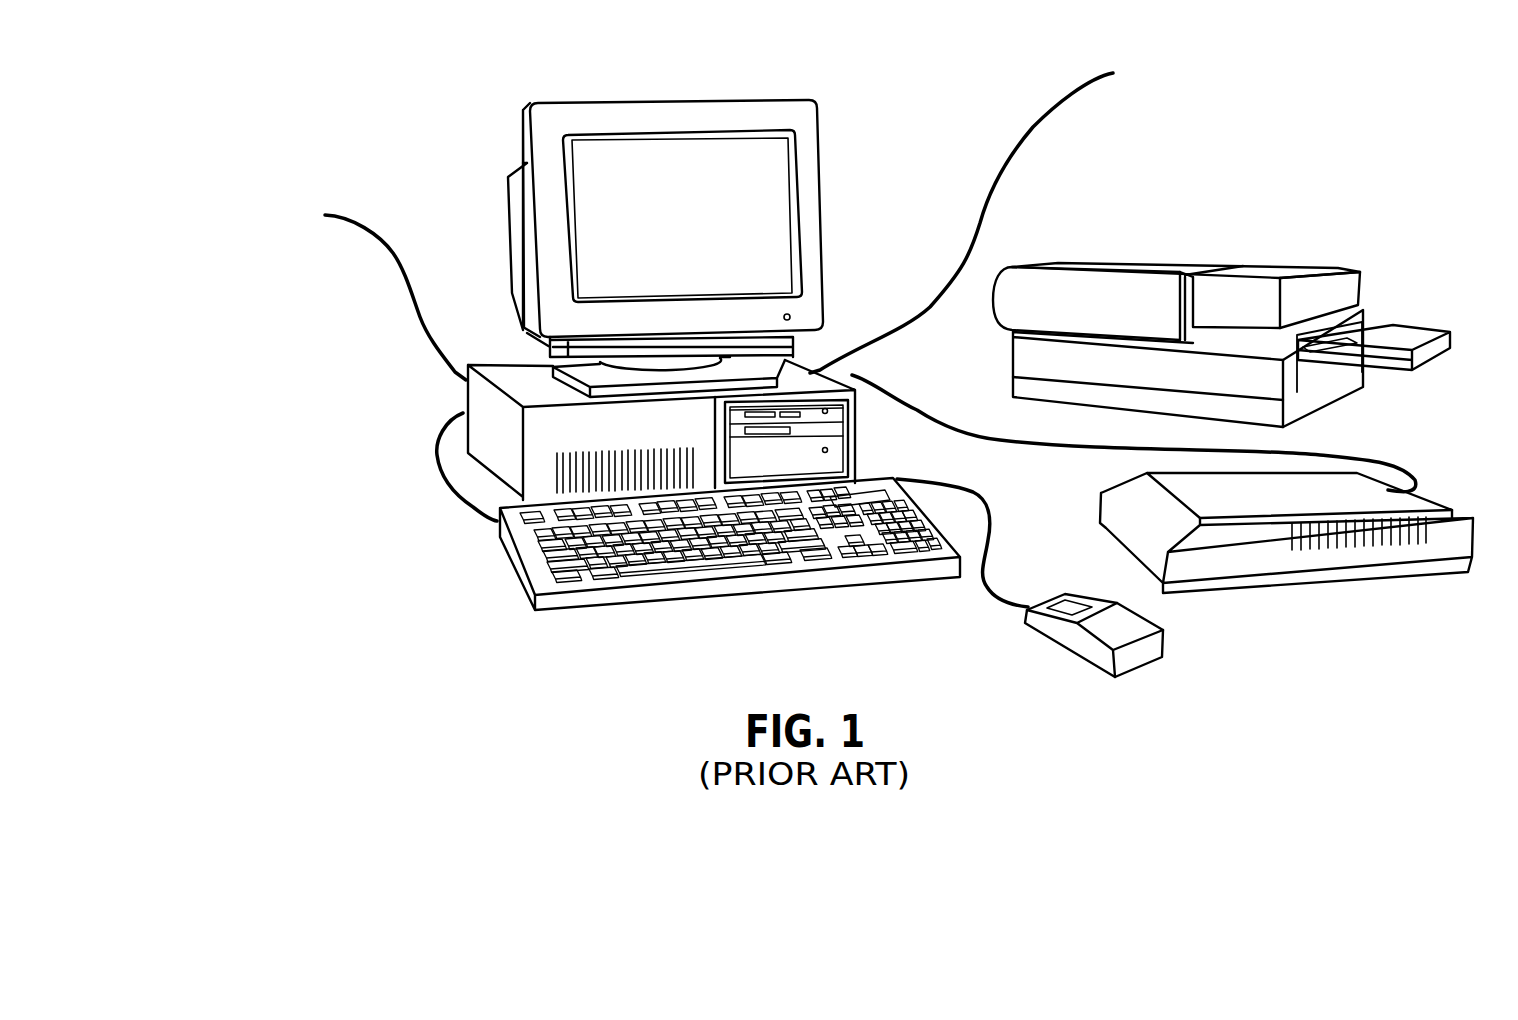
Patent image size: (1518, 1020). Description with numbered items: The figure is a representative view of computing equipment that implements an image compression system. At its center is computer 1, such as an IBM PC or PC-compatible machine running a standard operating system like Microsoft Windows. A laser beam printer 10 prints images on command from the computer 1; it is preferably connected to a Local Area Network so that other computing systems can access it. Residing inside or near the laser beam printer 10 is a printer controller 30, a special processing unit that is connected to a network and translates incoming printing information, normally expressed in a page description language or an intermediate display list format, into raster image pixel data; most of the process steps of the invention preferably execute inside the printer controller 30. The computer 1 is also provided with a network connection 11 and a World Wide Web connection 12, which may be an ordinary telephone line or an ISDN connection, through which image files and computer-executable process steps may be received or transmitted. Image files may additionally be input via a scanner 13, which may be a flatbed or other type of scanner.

The computer 1 is at (909, 124).
The laser beam printer 10 is at (1137, 262).
The network connection 11 is at (1036, 127).
The World Wide Web connection 12 is at (403, 263).
The scanner 13 is at (1325, 583).
The printer controller 30 is at (1013, 372).